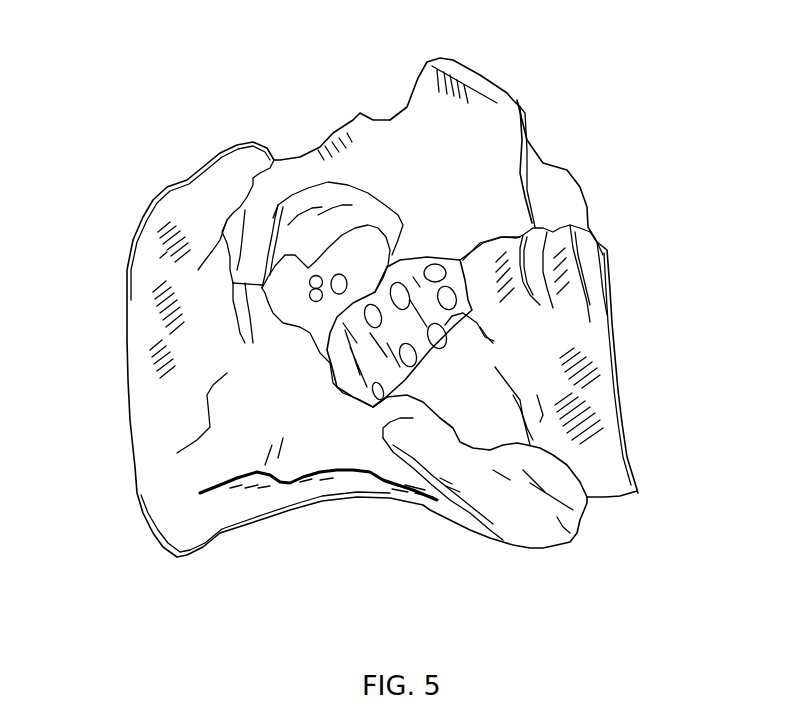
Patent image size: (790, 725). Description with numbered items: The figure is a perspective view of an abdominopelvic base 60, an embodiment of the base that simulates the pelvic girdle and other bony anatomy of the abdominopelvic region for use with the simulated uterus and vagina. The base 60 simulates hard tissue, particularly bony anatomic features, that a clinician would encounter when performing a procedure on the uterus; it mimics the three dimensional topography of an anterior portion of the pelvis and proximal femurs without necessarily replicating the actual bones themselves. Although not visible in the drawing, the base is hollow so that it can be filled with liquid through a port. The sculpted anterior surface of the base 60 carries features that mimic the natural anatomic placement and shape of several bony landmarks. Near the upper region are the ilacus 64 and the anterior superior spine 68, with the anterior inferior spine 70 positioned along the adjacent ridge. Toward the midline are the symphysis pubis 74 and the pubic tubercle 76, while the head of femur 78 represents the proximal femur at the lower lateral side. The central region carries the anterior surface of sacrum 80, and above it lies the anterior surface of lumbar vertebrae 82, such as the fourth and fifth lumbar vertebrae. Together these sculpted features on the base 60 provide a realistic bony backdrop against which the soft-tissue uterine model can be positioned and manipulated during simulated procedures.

The abdominopelvic base 60 is at (154, 91).
The ilacus 64 is at (460, 120).
The anterior superior spine 68 is at (527, 137).
The anterior inferior spine 70 is at (357, 118).
The symphysis pubis 74 is at (228, 283).
The pubic tubercle 76 is at (273, 323).
The head of femur 78 is at (237, 464).
The anterior surface of sacrum 80 is at (362, 305).
The anterior surface of lumbar vertebrae 82 is at (523, 275).